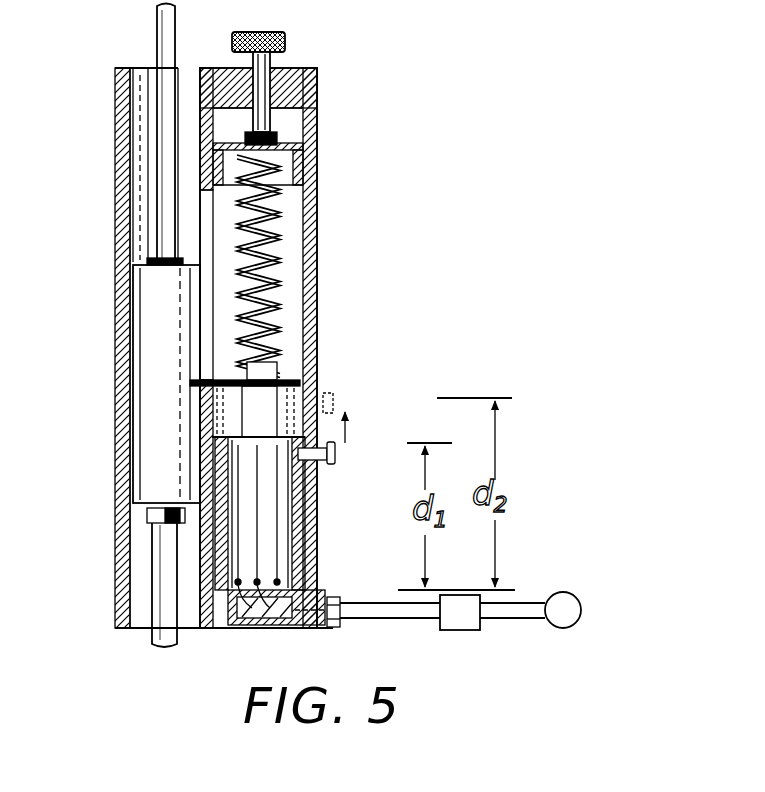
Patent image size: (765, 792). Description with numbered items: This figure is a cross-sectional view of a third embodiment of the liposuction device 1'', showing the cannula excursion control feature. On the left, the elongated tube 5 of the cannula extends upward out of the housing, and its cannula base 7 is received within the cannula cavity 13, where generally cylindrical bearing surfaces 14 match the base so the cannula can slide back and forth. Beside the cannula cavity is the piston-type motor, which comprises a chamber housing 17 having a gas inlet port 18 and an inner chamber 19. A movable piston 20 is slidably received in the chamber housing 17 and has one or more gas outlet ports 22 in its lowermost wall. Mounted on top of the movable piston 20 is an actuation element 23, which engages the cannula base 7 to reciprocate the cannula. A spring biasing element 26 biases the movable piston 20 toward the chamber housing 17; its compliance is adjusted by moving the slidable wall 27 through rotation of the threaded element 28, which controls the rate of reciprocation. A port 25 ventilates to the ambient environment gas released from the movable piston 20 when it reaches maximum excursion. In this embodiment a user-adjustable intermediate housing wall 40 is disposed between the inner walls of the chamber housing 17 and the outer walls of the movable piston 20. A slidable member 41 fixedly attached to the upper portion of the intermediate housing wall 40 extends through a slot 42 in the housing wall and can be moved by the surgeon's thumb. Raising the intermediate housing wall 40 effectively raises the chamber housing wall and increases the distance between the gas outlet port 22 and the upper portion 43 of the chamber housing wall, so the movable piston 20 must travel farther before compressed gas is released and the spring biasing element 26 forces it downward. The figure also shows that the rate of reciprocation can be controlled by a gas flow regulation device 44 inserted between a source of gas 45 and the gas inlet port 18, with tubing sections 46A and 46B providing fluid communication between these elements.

The elongated tube 5 is at (117, 133).
The cannula cavity 13 is at (123, 152).
The bearing surfaces 14 is at (99, 348).
The cannula base 7 is at (155, 322).
The upper portion of the chamber housing wall 43 is at (227, 435).
The inner chamber 19 is at (207, 545).
The gas outlet ports 22 is at (246, 600).
The threaded element 28 is at (280, 58).
The slidable wall 27 is at (305, 132).
The liposuction device 1'' is at (437, 118).
The spring biasing element 26 is at (278, 252).
The port 25 is at (313, 287).
The actuation element 23 is at (297, 383).
The slot 42 is at (347, 400).
The slidable member 41 is at (340, 453).
The intermediate housing wall 40 is at (316, 480).
The movable piston 20 is at (300, 543).
The chamber housing 17 is at (295, 595).
The gas inlet port 18 is at (332, 625).
The tubing section 46A is at (400, 622).
The gas flow regulation device 44 is at (467, 615).
The tubing section 46B is at (530, 618).
The source of gas 45 is at (582, 600).